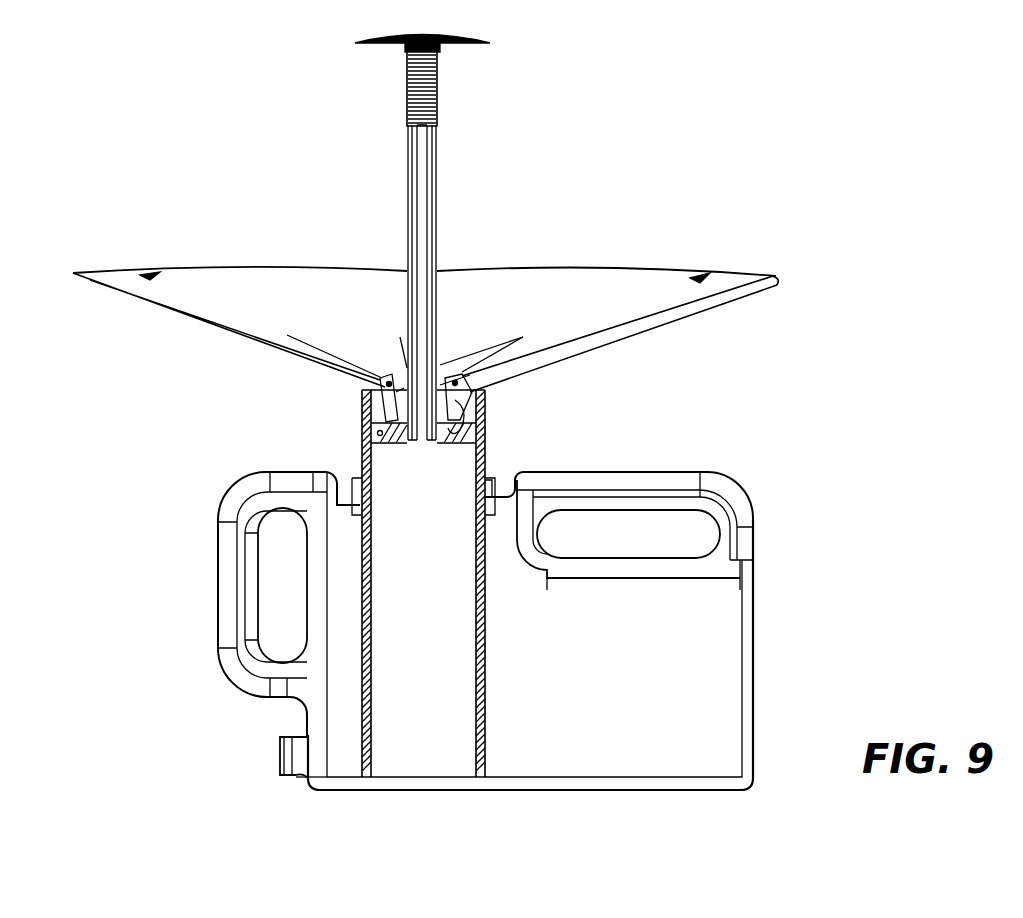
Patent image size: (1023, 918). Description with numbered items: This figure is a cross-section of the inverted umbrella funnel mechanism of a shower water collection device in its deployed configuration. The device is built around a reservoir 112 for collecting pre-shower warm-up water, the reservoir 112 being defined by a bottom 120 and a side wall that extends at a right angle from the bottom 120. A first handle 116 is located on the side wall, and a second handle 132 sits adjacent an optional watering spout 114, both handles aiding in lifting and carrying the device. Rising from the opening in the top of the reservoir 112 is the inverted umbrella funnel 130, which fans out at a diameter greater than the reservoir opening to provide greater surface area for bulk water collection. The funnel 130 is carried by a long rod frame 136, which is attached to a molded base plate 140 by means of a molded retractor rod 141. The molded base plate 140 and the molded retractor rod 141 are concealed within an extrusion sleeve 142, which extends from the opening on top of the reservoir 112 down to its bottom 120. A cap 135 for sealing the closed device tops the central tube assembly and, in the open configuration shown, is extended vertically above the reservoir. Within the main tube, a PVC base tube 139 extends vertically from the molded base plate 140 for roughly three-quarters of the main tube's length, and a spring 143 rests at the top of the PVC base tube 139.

The reservoir 112 is at (755, 632).
The watering spout 114 is at (280, 757).
The first handle 116 is at (725, 487).
The bottom 120 is at (580, 792).
The inverted umbrella funnel 130 is at (555, 298).
The second handle 132 is at (218, 570).
The cap 135 is at (487, 40).
The long rod frame 136 is at (722, 308).
The PVC base tube 139 is at (424, 200).
The molded base plate 140 is at (362, 432).
The molded retractor rod 141 is at (480, 400).
The extrusion sleeve 142 is at (455, 463).
The spring 143 is at (436, 88).